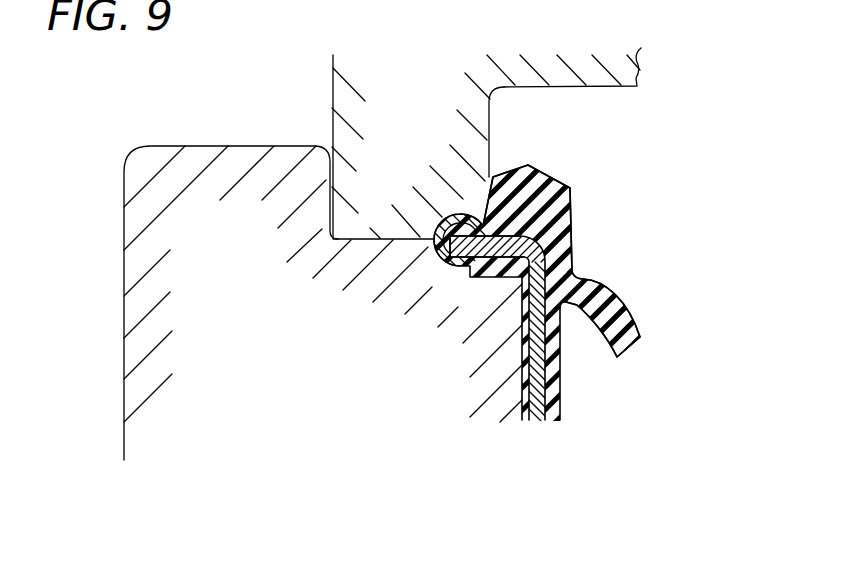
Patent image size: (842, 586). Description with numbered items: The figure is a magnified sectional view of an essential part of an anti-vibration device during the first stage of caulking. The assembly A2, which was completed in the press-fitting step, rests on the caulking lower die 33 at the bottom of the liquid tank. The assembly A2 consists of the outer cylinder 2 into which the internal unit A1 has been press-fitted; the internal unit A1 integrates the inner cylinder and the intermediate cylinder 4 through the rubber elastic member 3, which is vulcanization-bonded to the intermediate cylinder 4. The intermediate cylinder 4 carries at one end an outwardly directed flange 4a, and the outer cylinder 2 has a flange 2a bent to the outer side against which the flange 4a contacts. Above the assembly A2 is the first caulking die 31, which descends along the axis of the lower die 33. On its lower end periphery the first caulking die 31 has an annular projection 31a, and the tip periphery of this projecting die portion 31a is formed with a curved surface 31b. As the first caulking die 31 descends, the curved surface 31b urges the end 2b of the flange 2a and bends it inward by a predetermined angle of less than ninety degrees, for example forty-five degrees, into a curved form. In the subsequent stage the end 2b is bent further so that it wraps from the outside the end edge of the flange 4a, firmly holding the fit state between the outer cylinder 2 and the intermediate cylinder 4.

The first caulking die 31 is at (638, 82).
The annular projection 31a is at (342, 128).
The curved surface 31b is at (475, 212).
The caulking lower die 33 is at (137, 270).
The outer cylinder 2 is at (537, 393).
The flange 2a is at (453, 258).
The end 2b is at (443, 213).
The intermediate cylinder 4 is at (557, 348).
The outwardly directed flange 4a is at (566, 184).
The rubber elastic member 3 is at (603, 300).
The internal unit A1 is at (565, 387).
The assembly A2 is at (535, 483).